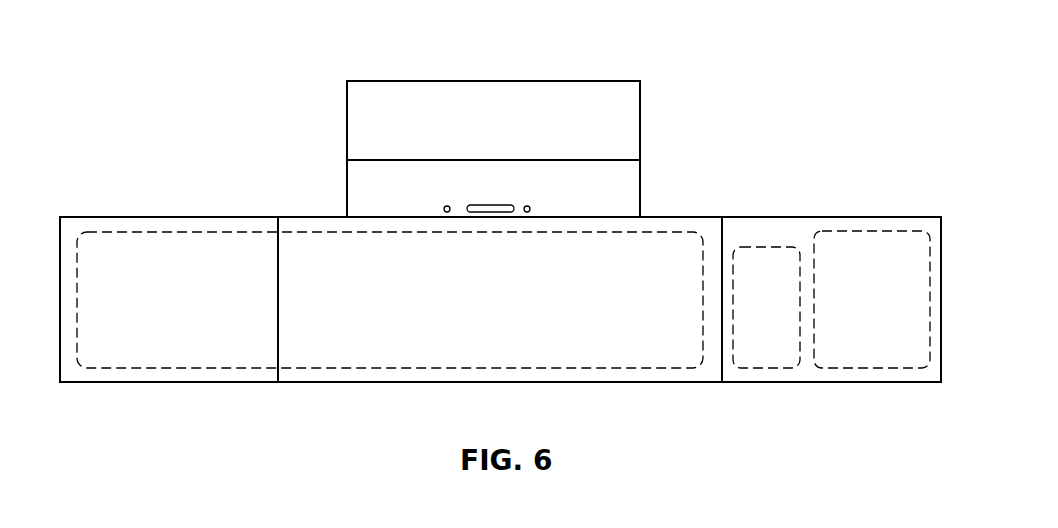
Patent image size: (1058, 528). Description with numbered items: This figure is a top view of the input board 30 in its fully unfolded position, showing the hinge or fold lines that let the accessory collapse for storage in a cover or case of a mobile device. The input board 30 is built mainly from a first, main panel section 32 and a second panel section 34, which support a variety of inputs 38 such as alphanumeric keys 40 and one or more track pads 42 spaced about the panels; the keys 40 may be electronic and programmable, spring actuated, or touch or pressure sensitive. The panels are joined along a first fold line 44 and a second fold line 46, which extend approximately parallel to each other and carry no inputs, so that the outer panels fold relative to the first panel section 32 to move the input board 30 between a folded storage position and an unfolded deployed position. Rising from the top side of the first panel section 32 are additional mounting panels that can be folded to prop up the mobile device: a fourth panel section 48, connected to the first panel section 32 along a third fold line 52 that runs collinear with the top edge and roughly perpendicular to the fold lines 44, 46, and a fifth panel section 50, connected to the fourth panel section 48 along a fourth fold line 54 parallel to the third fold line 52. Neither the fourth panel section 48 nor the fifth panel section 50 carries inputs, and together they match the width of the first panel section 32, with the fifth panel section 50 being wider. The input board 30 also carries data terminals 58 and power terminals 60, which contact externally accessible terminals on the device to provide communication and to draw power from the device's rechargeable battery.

The input board 30 is at (738, 58).
The first panel section 32 is at (103, 225).
The second panel section 34 is at (805, 232).
The inputs 38 is at (338, 252).
The alphanumeric keys 40 is at (358, 350).
The track pads 42 is at (775, 350).
The first fold line 44 is at (723, 225).
The second fold line 46 is at (278, 298).
The fourth panel section 48 is at (627, 200).
The fifth panel section 50 is at (573, 103).
The third fold line 52 is at (362, 216).
The fourth fold line 54 is at (565, 160).
The data terminals 58 is at (487, 205).
The power terminals 60 is at (444, 207).